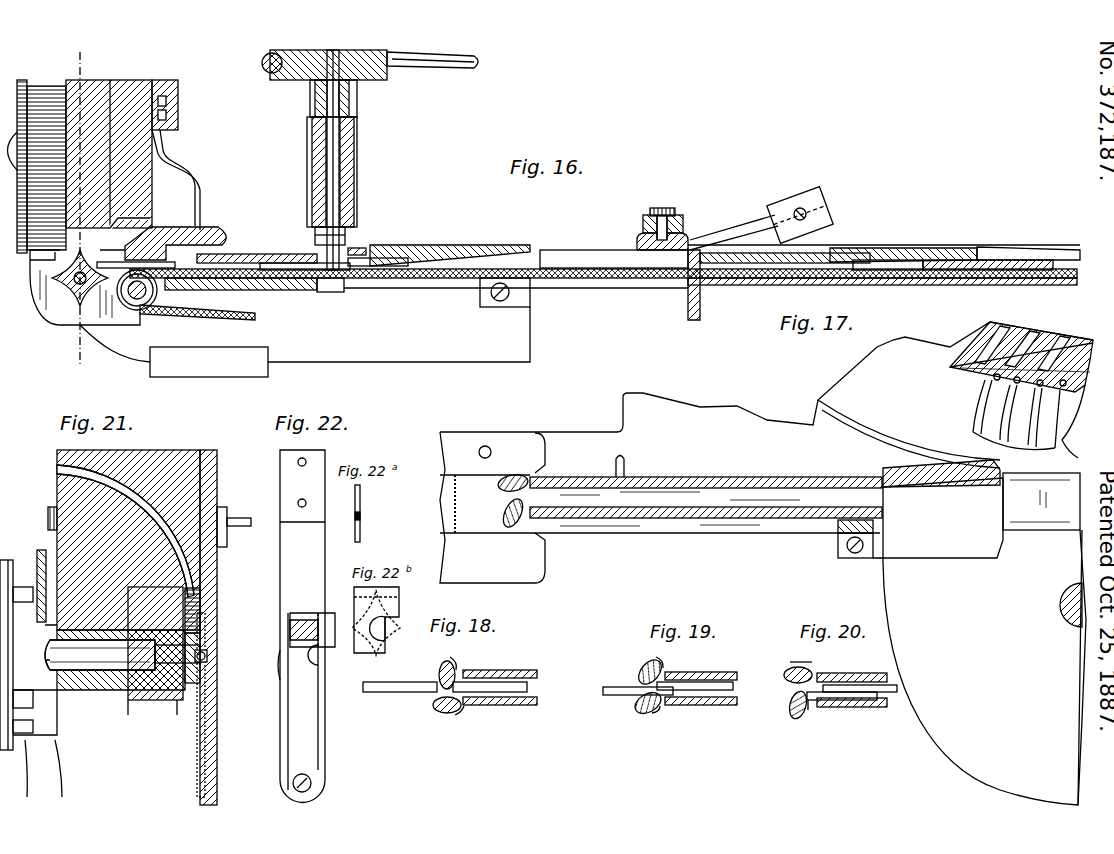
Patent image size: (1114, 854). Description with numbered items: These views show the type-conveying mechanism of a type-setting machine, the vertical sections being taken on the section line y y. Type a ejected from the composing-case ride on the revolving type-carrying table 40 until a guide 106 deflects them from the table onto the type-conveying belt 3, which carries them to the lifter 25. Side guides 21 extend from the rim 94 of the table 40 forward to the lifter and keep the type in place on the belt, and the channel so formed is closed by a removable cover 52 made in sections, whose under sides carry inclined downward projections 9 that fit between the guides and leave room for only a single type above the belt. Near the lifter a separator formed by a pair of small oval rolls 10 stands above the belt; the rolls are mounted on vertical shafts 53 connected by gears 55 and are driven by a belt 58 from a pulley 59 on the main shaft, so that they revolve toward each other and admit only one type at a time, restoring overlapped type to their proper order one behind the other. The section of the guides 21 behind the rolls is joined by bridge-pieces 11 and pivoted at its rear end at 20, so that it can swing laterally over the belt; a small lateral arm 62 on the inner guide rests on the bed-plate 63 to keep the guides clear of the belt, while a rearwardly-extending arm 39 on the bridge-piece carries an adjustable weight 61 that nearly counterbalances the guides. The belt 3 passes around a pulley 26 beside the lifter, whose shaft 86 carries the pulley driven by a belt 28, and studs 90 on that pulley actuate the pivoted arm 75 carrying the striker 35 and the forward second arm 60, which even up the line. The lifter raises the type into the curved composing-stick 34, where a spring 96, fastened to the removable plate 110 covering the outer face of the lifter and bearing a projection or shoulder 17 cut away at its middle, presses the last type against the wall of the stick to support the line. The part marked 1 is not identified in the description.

In FIG. 17, the forearm band 1 is at (1018, 338).
In FIG. 16, the type-conveying belt 3 is at (250, 317).
In FIG. 17, the type-conveying belt 3 is at (672, 524).
In FIG. 16, the inclined downward projections 9 is at (378, 262).
In FIG. 16, the oval-shaped rolls 10 is at (327, 289).
In FIG. 17, the oval-shaped rolls 10 is at (508, 488).
In FIG. 18, the oval-shaped rolls 10 is at (442, 672).
In FIG. 19, the oval-shaped rolls 10 is at (650, 668).
In FIG. 20, the oval-shaped rolls 10 is at (798, 682).
In FIG. 16, the bridge-pieces 11 is at (360, 248).
In FIG. 22, the projection or shoulder 17 is at (292, 630).
In FIG. 22A, the projection or shoulder 17 is at (356, 500).
In FIG. 22B, the projection or shoulder 17 is at (358, 600).
In FIG. 16, the pivot 20 is at (683, 220).
In FIG. 17, the pivot 20 is at (875, 528).
In FIG. 16, the side guides 21 is at (622, 268).
In FIG. 17, the side guides 21 is at (915, 460).
In FIG. 18, the side guides 21 is at (510, 670).
In FIG. 19, the side guides 21 is at (712, 672).
In FIG. 20, the side guides 21 is at (855, 672).
In FIG. 16, the lifter 25 is at (80, 278).
In FIG. 21, the lifter 25 is at (205, 676).
In FIG. 22B, the lifter 25 is at (379, 622).
In FIG. 16, the pulley 26 is at (158, 292).
In FIG. 21, the belt 28 is at (0, 556).
In FIG. 16, the composing-stick 34 is at (27, 82).
In FIG. 21, the composing-stick 34 is at (62, 472).
In FIG. 16, the striker 35 is at (218, 227).
In FIG. 16, the rearwardly-extending arm 39 is at (736, 224).
In FIG. 17, the revolving type-carrying table 40 is at (1025, 409).
In FIG. 16, the removable cover 52 is at (205, 255).
In FIG. 16, the vertical shafts 53 is at (345, 152).
In FIG. 16, the gears 55 is at (350, 110).
In FIG. 16, the belt 58 is at (377, 50).
In FIG. 16, the pulley 59 is at (462, 58).
In FIG. 21, the second arm 60 is at (42, 550).
In FIG. 16, the adjustable weight 61 is at (820, 200).
In FIG. 17, the lateral arm 62 is at (625, 466).
In FIG. 17, the bed-plate 63 is at (695, 435).
In FIG. 21, the arm 75 is at (58, 716).
In FIG. 16, the shaft of the lifter 86 is at (70, 280).
In FIG. 21, the shaft of the lifter 86 is at (115, 660).
In FIG. 21, the studs 90 is at (23, 590).
In FIG. 17, the rim 94 is at (925, 445).
In FIG. 21, the spring 96 is at (207, 630).
In FIG. 22, the spring 96 is at (298, 702).
In FIG. 22A, the spring 96 is at (367, 521).
In FIG. 22B, the spring 96 is at (371, 633).
In FIG. 17, the guide 106 is at (1062, 422).
In FIG. 21, the removable plate 110 is at (205, 610).
In FIG. 22, the removable plate 110 is at (302, 626).
In FIG. 16, the type a is at (485, 258).
In FIG. 21, the type a is at (200, 600).
In FIG. 18, the type a is at (403, 692).
In FIG. 19, the type a is at (614, 687).
In FIG. 20, the type a is at (830, 702).
In FIG. 16, the section line y is at (85, 210).